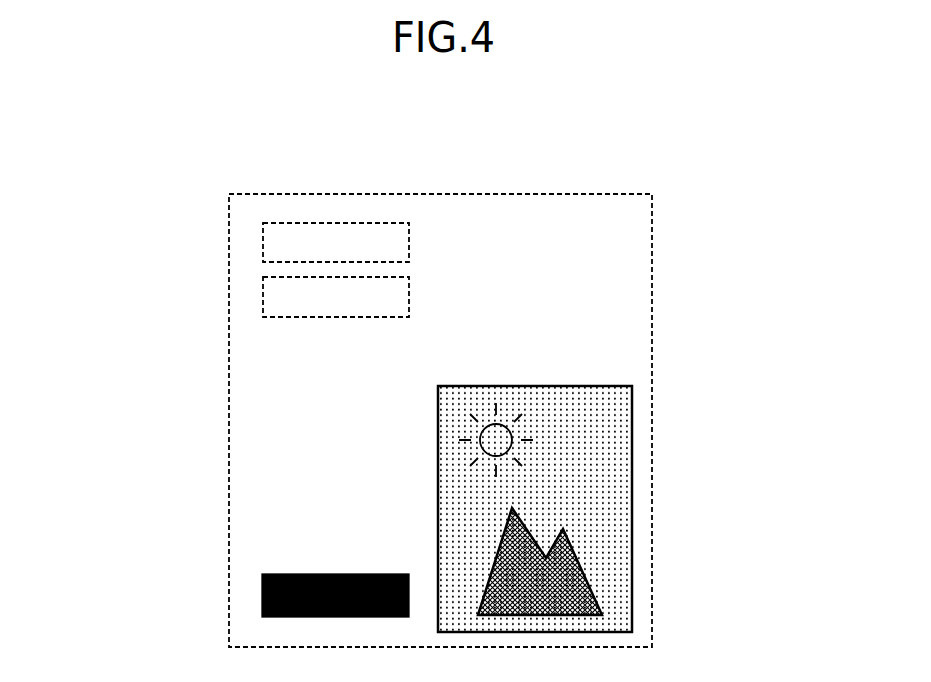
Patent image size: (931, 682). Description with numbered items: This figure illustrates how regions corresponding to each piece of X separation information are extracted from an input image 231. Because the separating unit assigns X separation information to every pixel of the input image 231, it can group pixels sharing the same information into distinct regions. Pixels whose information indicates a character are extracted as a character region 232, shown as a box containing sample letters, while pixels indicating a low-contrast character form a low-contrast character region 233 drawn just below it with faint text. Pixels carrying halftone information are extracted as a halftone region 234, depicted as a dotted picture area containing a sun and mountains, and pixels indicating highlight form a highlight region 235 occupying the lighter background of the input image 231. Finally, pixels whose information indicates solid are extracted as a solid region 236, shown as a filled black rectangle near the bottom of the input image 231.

The input image 231 is at (583, 210).
The character region 232 is at (265, 243).
The low-contrast character region 233 is at (265, 297).
The halftone region 234 is at (633, 496).
The highlight region 235 is at (609, 306).
The solid region 236 is at (262, 593).